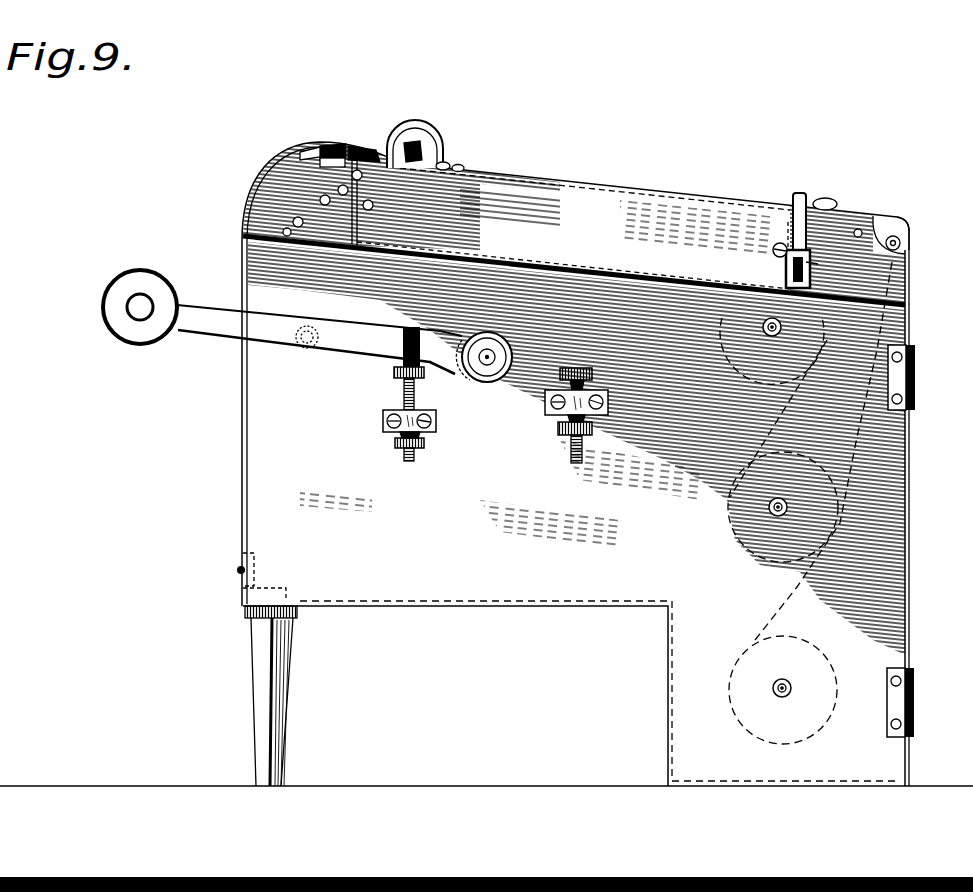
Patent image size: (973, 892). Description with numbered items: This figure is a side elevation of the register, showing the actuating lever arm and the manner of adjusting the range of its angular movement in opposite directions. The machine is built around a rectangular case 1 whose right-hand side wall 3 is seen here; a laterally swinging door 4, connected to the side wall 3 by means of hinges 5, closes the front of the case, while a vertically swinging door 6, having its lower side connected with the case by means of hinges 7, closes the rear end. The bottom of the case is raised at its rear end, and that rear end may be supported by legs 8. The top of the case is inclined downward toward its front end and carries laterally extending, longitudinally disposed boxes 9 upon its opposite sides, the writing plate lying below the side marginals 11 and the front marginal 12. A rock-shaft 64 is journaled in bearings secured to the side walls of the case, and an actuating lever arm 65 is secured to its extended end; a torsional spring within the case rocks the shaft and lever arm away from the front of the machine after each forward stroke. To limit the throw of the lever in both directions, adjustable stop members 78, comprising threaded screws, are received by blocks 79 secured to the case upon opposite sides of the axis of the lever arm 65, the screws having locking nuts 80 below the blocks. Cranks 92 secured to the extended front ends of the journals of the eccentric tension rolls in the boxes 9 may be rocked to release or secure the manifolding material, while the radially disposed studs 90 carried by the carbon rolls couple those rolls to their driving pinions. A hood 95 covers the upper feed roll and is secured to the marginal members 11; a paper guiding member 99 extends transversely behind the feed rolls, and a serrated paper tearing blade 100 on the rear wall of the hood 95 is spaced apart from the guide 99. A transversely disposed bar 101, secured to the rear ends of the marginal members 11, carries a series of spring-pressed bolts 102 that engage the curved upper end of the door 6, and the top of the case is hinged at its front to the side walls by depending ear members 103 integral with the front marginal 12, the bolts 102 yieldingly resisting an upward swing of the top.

The rectangular case 1 is at (390, 607).
The right-hand side wall 3 is at (510, 593).
The laterally swinging door 4 is at (908, 578).
The hinges 5 is at (917, 380).
The vertically swinging door 6 is at (240, 452).
The hinges 7 is at (243, 594).
The legs 8 is at (290, 705).
The boxes 9 is at (683, 197).
The side marginals 11 is at (583, 192).
The front marginal 12 is at (862, 217).
The rock-shaft 64 is at (491, 352).
The actuating lever arm 65 is at (220, 323).
The adjustable stop members 78 is at (557, 376).
The blocks 79 is at (547, 415).
The locking nuts 80 is at (558, 434).
The radially disposed studs 90 is at (809, 266).
The cranks 92 is at (802, 195).
The hood 95 is at (444, 148).
The paper guiding member 99 is at (360, 144).
The paper tearing blade 100 is at (388, 128).
The transversely disposed bar 101 is at (312, 147).
The spring-pressed bolts 102 is at (334, 142).
The depending ear members 103 is at (910, 236).